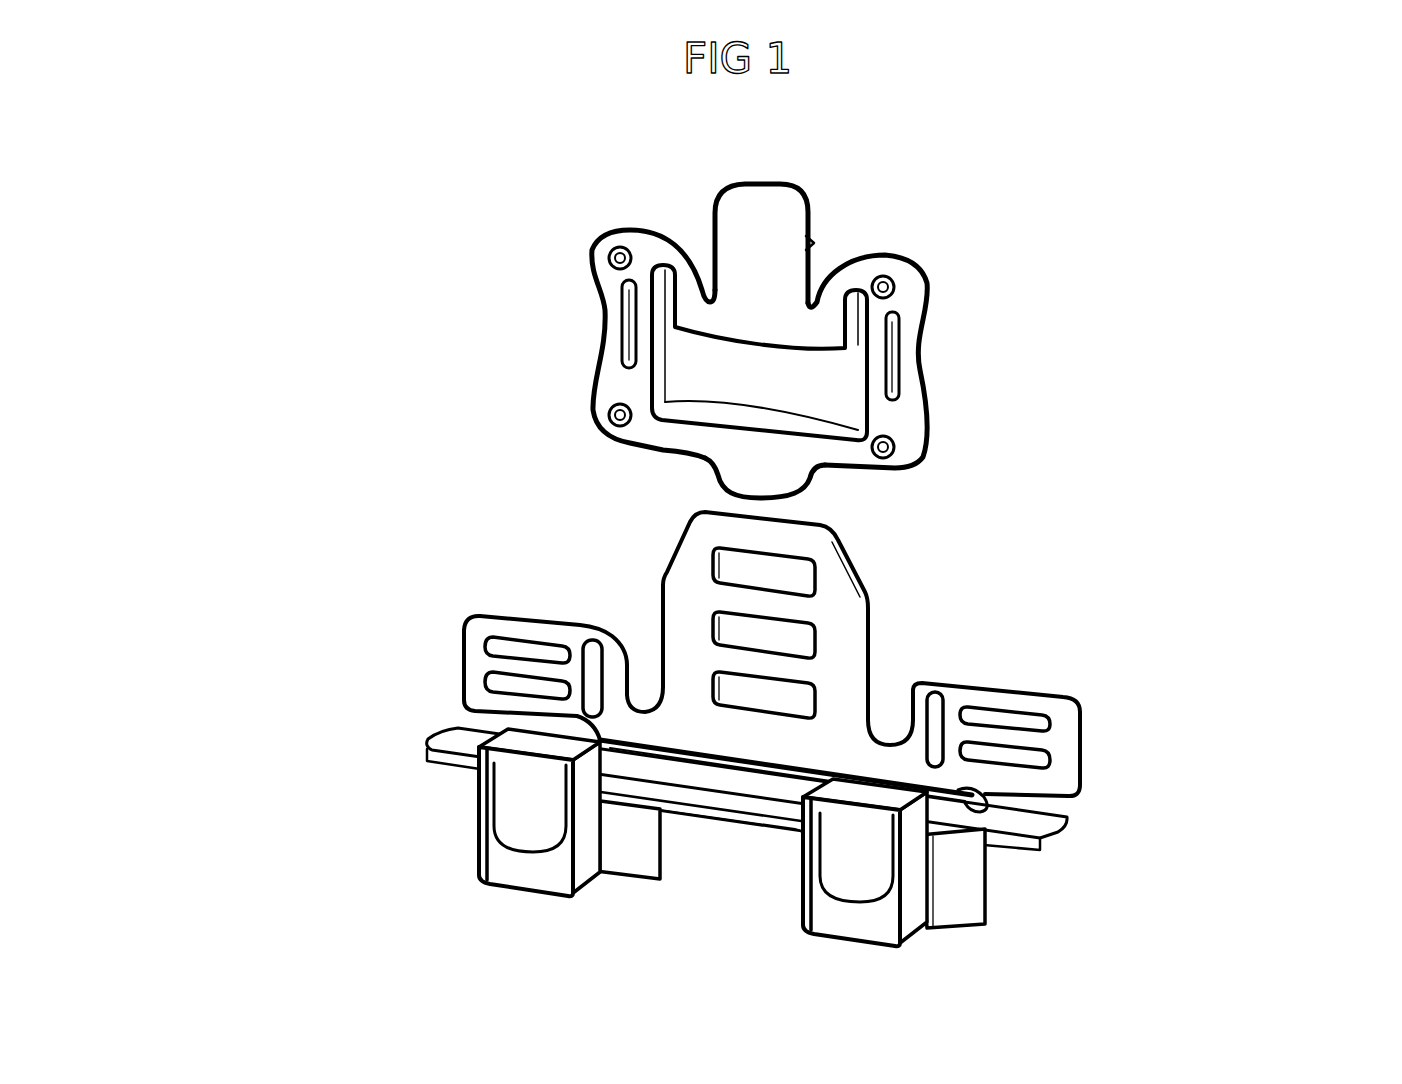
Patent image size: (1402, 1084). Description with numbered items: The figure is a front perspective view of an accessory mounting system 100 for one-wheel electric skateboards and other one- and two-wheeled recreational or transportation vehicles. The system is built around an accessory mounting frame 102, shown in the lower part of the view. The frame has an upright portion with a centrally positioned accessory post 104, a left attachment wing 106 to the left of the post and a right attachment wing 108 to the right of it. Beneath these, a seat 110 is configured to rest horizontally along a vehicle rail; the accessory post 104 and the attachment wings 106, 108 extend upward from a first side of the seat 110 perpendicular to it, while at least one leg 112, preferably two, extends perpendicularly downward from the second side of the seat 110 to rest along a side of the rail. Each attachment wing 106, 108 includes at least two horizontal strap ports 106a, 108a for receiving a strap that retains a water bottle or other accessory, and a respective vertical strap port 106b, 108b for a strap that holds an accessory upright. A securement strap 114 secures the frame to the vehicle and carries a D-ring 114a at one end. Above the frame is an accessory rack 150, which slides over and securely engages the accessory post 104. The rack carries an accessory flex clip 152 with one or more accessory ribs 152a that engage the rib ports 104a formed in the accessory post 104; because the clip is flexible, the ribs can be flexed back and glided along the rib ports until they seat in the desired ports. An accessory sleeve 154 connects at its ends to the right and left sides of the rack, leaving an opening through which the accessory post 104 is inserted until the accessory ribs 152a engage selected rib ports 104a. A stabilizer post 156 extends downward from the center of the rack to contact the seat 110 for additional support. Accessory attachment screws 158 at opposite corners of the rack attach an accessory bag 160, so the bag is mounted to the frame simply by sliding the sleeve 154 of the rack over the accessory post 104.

The accessory mounting system 100 is at (342, 212).
The accessory mounting frame 102 is at (318, 511).
The accessory post 104 is at (657, 576).
The rib ports 104a is at (780, 690).
The left attachment wing 106 is at (510, 613).
The horizontal strap ports 106a is at (517, 685).
The vertical strap port 106b is at (580, 708).
The right attachment wing 108 is at (1090, 728).
The horizontal strap ports 108a is at (1007, 753).
The vertical strap port 108b is at (947, 702).
The seat 110 is at (1077, 817).
The leg 112 is at (610, 847).
The securement strap 114 is at (842, 878).
The D-ring 114a is at (970, 812).
The accessory rack 150 is at (480, 173).
The accessory flex clip 152 is at (810, 202).
The accessory ribs 152a is at (820, 242).
The accessory sleeve 154 is at (793, 377).
The stabilizer post 156 is at (773, 487).
The accessory attachment screws 158 is at (905, 292).
The accessory bag 160 is at (617, 358).